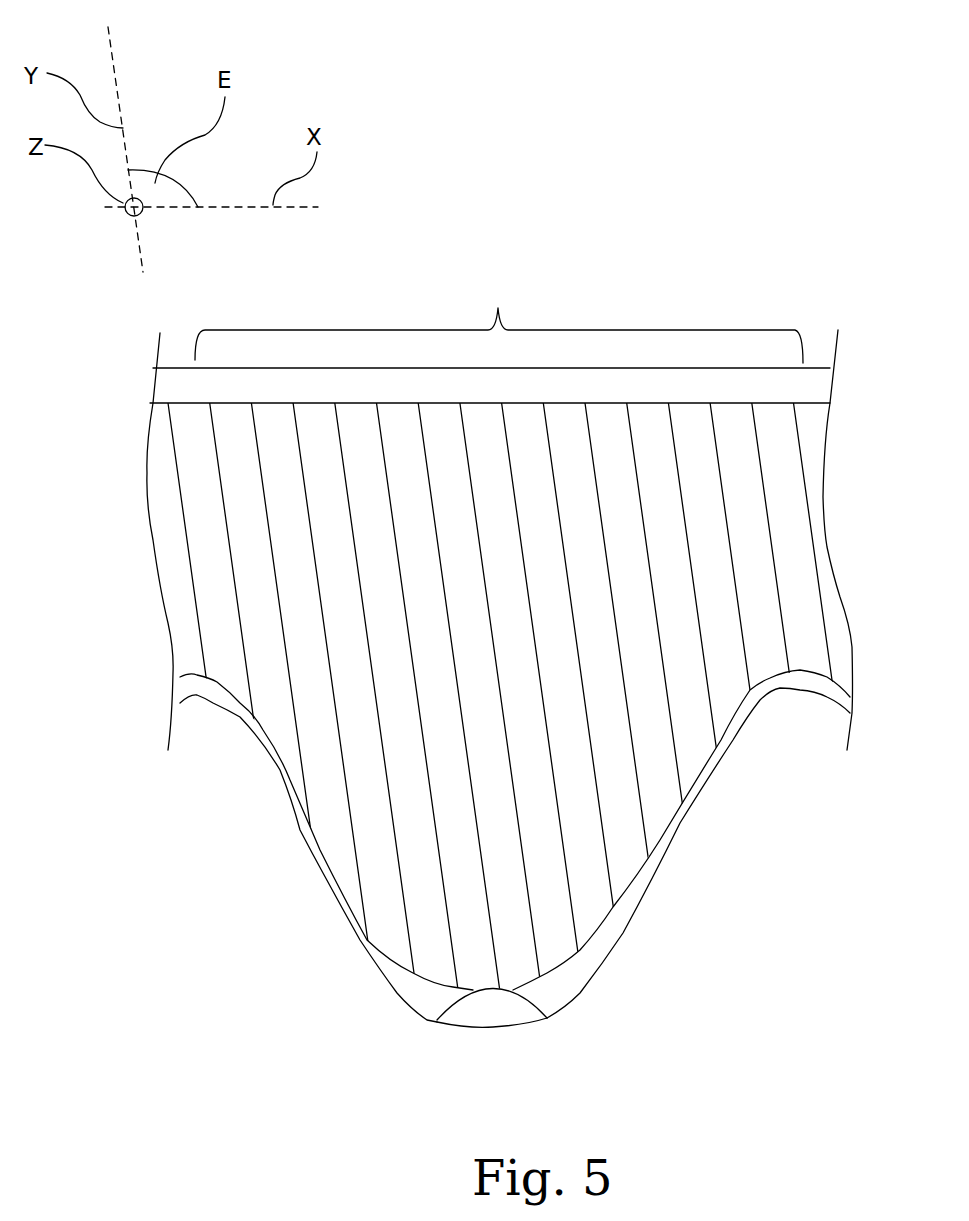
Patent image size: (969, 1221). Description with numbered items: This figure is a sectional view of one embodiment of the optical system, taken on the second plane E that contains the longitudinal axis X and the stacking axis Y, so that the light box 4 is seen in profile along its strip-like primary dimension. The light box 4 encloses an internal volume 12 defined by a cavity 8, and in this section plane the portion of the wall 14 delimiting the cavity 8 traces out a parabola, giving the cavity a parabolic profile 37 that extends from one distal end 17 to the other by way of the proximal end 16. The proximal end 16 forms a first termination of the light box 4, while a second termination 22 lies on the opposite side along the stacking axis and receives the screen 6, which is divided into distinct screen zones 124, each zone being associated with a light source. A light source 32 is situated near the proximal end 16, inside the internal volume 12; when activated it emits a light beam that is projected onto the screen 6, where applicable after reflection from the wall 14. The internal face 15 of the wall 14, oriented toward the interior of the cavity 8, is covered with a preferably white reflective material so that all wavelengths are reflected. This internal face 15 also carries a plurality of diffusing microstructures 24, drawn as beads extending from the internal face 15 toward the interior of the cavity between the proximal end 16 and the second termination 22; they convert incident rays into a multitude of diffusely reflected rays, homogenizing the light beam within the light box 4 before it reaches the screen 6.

The second termination 22 is at (140, 405).
The screen zone 124 is at (491, 319).
The screen 6 is at (809, 390).
The diffusing microstructures 24 is at (287, 523).
The internal volume 12 is at (375, 660).
The distal end 17 is at (800, 673).
The light box 4 is at (770, 750).
The internal face 15 is at (420, 835).
The wall 14 is at (700, 840).
The cavity 8 is at (520, 855).
The parabolic profile 37 is at (632, 940).
The proximal end 16 is at (637, 1020).
The light source 32 is at (457, 1013).